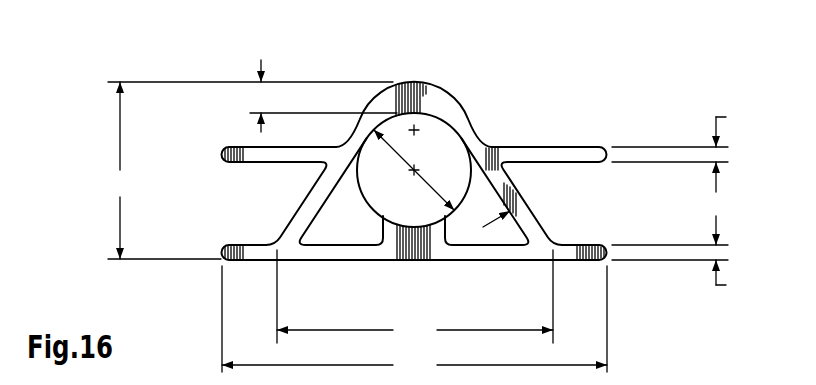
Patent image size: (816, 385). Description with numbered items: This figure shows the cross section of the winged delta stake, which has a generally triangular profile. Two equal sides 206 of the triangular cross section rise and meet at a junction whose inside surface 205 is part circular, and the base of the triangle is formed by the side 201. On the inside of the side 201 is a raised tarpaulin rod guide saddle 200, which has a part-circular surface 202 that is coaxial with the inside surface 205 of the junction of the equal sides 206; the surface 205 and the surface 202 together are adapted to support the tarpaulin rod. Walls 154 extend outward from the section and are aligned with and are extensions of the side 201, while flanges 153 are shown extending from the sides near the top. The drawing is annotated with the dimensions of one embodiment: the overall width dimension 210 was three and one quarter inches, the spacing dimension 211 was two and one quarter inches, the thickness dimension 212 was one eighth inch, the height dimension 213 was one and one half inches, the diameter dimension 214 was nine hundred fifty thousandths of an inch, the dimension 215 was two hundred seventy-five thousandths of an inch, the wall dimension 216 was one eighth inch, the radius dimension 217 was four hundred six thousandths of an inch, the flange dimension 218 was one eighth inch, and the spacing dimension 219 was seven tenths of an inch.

The upper side flange 153 is at (243, 148).
The walls 154 is at (240, 247).
The tarpaulin rod guide saddle 200 is at (428, 242).
The side 201 is at (331, 250).
The part-circular surface 202 is at (410, 228).
The inside surface 205 is at (440, 117).
The equal sides 206 is at (320, 193).
The dimension 210 is at (414, 321).
The dimension 211 is at (415, 296).
The dimension 212 is at (692, 281).
The dimension 213 is at (248, 170).
The diameter dimension 214 is at (360, 112).
The dimension 215 is at (321, 96).
The dimension 216 is at (525, 197).
The radius dimension 217 is at (414, 130).
The dimension 218 is at (689, 133).
The dimension 219 is at (673, 203).